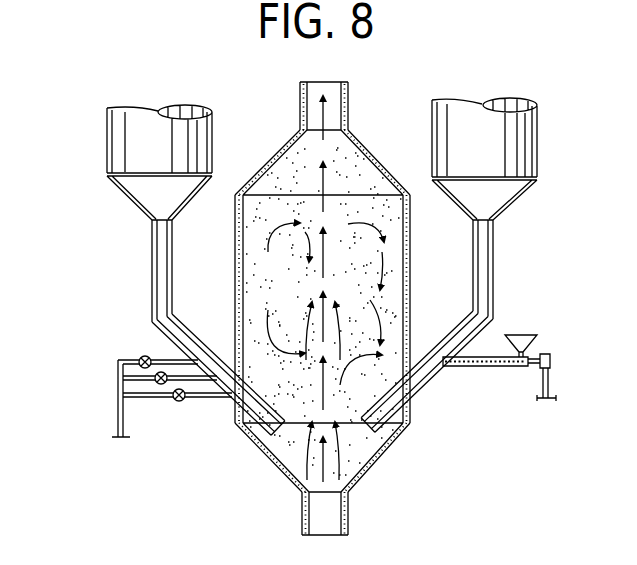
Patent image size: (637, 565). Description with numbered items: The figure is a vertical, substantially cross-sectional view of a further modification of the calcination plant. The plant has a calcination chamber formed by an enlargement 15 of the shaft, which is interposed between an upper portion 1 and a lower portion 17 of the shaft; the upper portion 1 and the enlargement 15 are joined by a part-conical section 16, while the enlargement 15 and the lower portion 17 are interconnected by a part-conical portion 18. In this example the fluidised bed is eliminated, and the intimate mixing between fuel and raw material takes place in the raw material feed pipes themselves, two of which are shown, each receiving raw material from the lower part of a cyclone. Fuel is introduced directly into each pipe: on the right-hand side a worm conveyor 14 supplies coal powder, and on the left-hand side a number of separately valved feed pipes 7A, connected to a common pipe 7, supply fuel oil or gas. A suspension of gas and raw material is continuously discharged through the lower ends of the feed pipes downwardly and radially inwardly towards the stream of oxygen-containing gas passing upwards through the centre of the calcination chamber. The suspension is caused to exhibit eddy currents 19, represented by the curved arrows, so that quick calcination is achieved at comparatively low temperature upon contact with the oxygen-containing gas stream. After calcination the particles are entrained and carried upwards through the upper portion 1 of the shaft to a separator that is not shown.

The upper portion of the shaft 1 is at (348, 103).
The common pipe 7 is at (116, 428).
The separately valved feed pipes 7A is at (141, 380).
The worm conveyor 14 is at (481, 366).
The enlargement 15 is at (410, 303).
The part-conical section 16 is at (371, 152).
The lower portion of the shaft 17 is at (348, 515).
The part-conical portion 18 is at (385, 452).
The eddy currents 19 is at (386, 256).